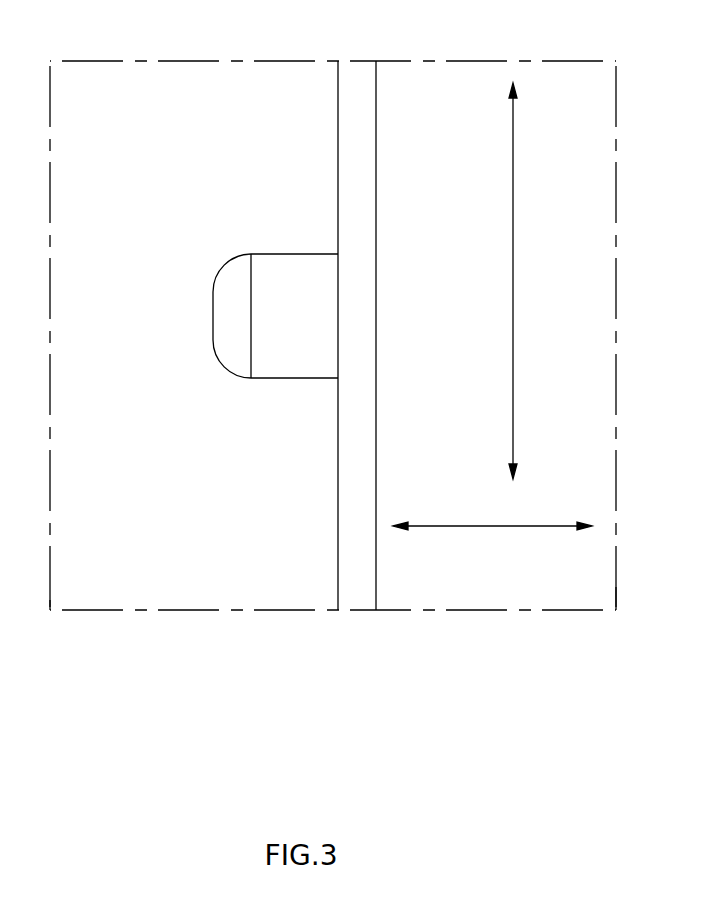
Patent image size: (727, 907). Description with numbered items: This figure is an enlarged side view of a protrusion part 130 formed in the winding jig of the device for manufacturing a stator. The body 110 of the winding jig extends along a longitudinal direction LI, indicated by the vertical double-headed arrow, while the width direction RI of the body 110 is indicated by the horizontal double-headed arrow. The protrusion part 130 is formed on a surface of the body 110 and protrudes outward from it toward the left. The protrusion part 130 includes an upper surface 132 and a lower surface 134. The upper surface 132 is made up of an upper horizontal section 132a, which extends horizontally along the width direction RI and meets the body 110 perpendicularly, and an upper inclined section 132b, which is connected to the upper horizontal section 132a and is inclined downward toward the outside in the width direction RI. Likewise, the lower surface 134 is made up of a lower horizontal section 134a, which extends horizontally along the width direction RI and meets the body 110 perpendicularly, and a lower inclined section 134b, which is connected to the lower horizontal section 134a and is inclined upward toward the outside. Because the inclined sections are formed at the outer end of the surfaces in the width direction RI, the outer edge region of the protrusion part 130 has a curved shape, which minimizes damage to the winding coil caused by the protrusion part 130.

The body 110 is at (443, 80).
The protrusion part 130 is at (380, 424).
The upper surface 132 is at (257, 214).
The upper horizontal section 132a is at (295, 254).
The upper inclined section 132b is at (214, 253).
The lower surface 134 is at (257, 418).
The lower horizontal section 134a is at (295, 378).
The lower inclined section 134b is at (214, 379).
The longitudinal direction LI is at (513, 259).
The width direction RI is at (492, 528).